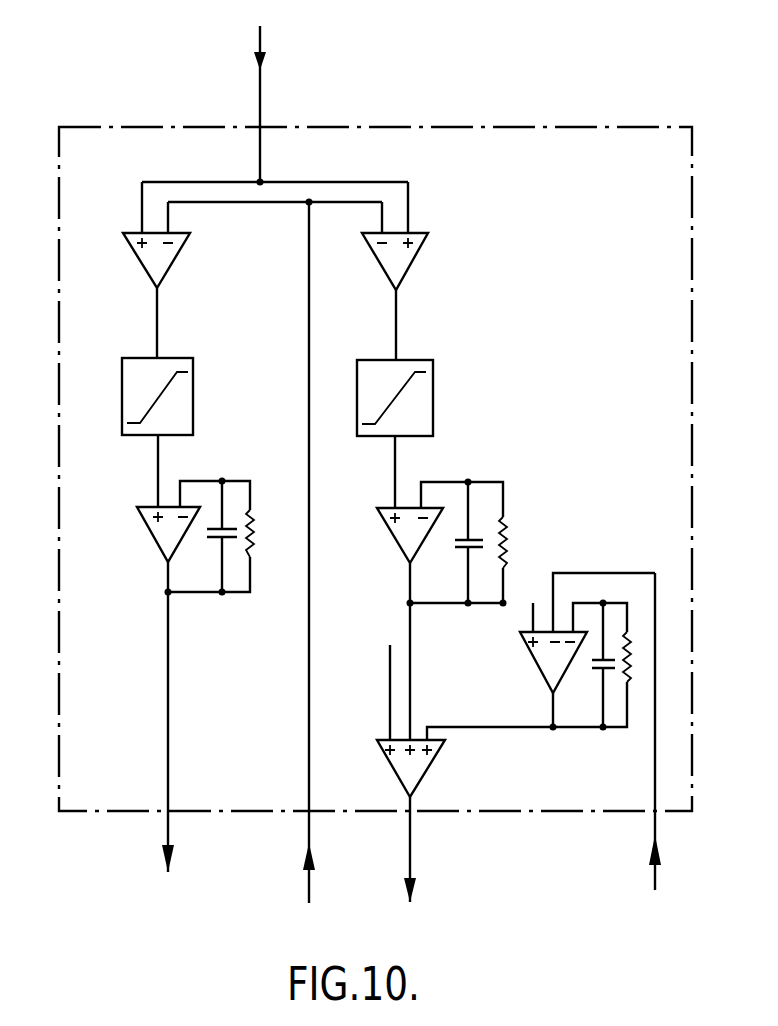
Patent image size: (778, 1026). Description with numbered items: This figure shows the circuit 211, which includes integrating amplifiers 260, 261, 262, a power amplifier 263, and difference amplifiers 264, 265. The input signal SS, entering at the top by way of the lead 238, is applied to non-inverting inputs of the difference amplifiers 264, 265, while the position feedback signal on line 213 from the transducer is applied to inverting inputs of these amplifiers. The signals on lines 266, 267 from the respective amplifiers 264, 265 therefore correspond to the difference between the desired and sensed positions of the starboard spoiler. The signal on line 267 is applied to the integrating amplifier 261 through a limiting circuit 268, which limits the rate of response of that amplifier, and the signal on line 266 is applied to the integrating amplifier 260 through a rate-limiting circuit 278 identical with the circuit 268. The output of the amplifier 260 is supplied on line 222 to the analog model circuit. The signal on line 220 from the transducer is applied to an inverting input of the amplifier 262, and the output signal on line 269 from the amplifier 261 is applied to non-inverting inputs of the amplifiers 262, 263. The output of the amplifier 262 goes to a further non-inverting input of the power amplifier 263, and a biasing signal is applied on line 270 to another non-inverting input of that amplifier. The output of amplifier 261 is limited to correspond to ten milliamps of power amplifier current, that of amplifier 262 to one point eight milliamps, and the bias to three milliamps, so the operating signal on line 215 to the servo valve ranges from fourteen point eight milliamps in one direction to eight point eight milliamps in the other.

The circuit 211 is at (105, 767).
The speed signal input SS 238 is at (262, 97).
The line 213 is at (311, 873).
The difference amplifier 264 is at (160, 257).
The difference amplifier 265 is at (396, 255).
The line 266 is at (158, 320).
The line 267 is at (397, 319).
The rate-limiting circuit 278 is at (175, 417).
The limiting circuit 268 is at (412, 411).
The integrating amplifier 260 is at (170, 532).
The integrating amplifier 261 is at (408, 532).
The integrating amplifier 262 is at (548, 657).
The power amplifier 263 is at (412, 767).
The line 269 is at (410, 667).
The line 270 is at (390, 662).
The line 222 is at (171, 820).
The line 215 is at (412, 843).
The line 220 is at (654, 860).